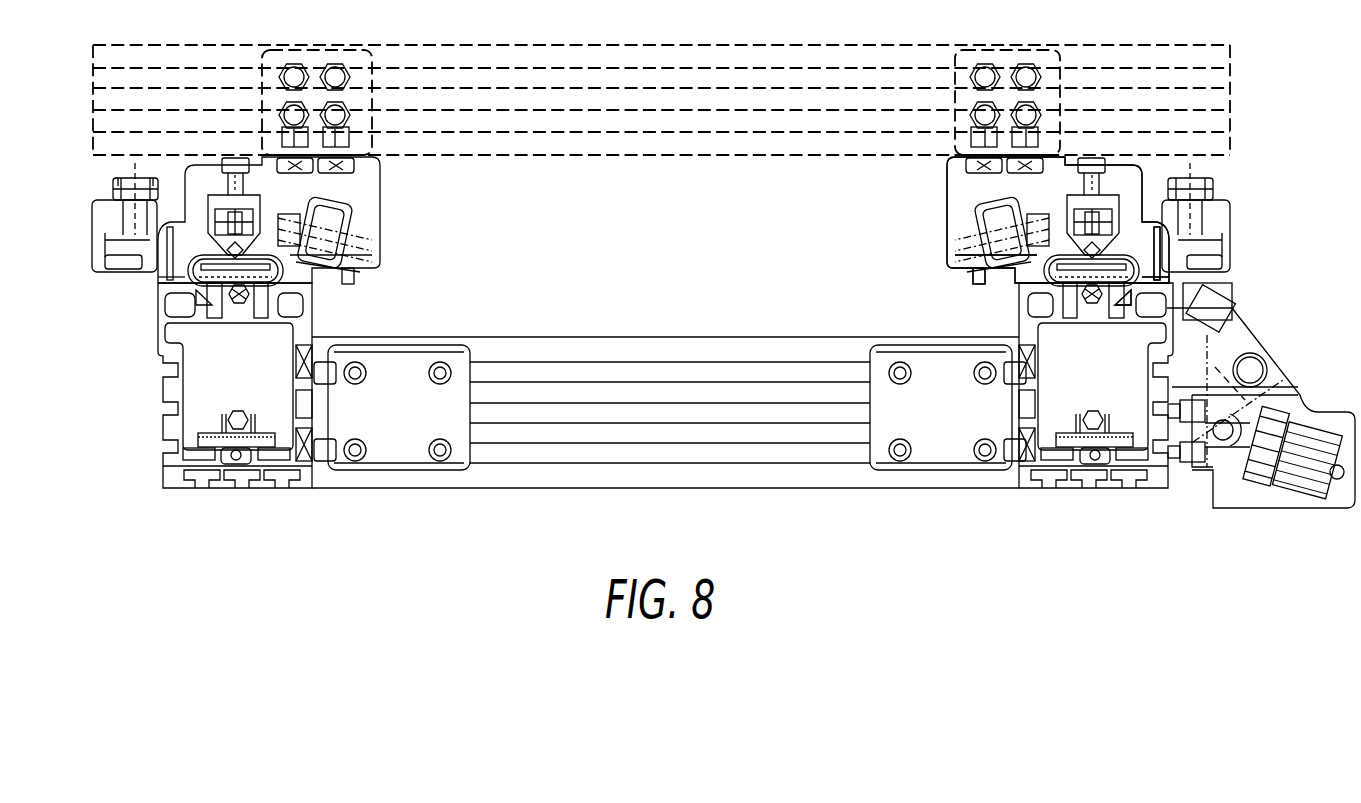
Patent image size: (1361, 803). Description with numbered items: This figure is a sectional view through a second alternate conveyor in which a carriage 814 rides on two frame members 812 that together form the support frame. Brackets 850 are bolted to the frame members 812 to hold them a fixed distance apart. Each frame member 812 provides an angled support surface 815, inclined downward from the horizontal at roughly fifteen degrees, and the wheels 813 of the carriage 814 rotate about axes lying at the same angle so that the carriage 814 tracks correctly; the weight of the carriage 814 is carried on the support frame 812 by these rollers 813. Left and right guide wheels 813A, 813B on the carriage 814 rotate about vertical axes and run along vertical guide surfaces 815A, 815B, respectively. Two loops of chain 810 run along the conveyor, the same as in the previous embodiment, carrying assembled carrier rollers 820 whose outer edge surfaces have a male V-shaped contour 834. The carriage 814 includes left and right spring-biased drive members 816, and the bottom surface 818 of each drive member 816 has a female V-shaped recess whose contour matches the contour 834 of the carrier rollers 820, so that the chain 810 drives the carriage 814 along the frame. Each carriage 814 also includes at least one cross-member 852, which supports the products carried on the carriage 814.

The chain 810 is at (264, 406).
The frame member 812 is at (160, 352).
The wheel 813 is at (362, 252).
The left guide wheel 813A is at (145, 267).
The right guide wheel 813B is at (1215, 275).
The carriage 814 is at (386, 204).
The support surface 815 is at (292, 260).
The vertical guide surface 815A is at (157, 225).
The vertical guide surface 815B is at (1140, 250).
The spring-biased drive member 816 is at (262, 218).
The bottom surface 818 is at (242, 250).
The carrier roller 820 is at (238, 318).
The contour 834 is at (960, 167).
The bracket 850 is at (700, 337).
The cross-member 852 is at (640, 157).